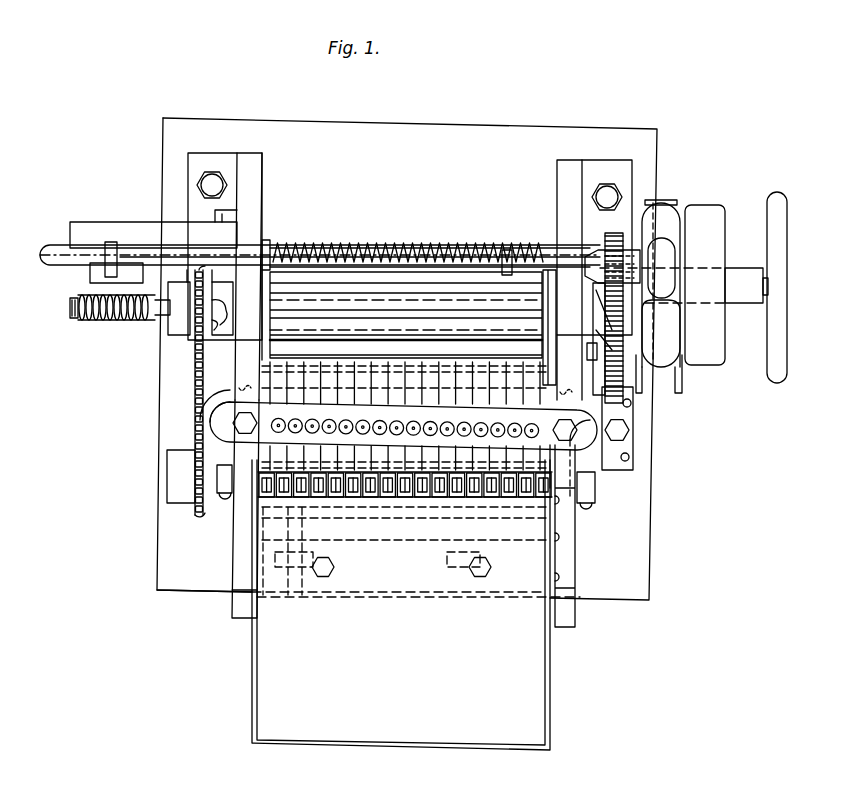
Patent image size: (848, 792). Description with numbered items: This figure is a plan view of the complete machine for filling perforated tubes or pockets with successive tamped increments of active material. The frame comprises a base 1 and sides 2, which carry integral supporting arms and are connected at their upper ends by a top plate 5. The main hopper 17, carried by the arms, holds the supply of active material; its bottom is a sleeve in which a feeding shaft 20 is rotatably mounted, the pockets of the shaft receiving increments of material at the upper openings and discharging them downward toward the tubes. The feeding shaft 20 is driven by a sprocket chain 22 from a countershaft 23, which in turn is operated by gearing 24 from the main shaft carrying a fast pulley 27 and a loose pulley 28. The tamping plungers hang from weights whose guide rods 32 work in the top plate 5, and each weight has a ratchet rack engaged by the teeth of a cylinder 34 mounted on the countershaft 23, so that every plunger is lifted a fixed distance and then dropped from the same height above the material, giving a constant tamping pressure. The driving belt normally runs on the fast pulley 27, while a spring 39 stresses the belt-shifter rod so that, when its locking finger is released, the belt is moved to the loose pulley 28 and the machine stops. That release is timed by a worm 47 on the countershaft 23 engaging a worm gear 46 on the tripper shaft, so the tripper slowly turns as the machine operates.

The base 1 is at (160, 571).
The sides 2 is at (252, 183).
The top plate 5 is at (412, 470).
The main hopper 17 is at (448, 743).
The feeding shaft 20 is at (217, 487).
The sprocket chain 22 is at (195, 399).
The countershaft 23 is at (208, 302).
The gearing 24 is at (623, 370).
The fast pulley 27 is at (662, 296).
The loose pulley 28 is at (736, 287).
The guide rods 32 is at (420, 418).
The cylinder 34 is at (397, 293).
The spring 39 is at (468, 250).
The worm gear 46 is at (78, 307).
The worm 47 is at (110, 320).